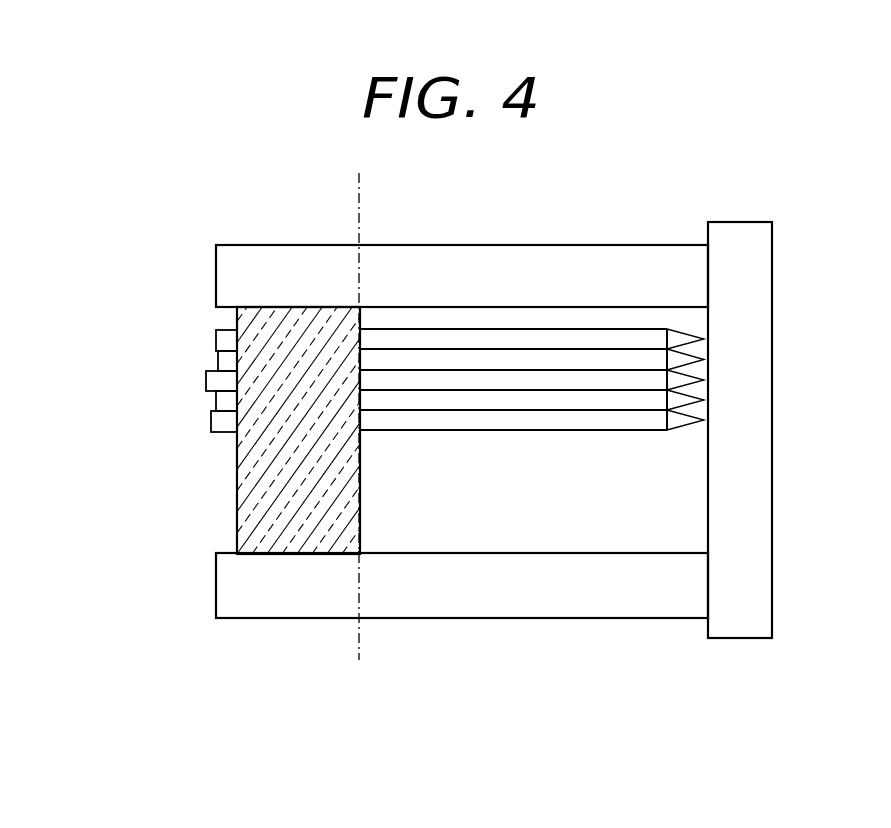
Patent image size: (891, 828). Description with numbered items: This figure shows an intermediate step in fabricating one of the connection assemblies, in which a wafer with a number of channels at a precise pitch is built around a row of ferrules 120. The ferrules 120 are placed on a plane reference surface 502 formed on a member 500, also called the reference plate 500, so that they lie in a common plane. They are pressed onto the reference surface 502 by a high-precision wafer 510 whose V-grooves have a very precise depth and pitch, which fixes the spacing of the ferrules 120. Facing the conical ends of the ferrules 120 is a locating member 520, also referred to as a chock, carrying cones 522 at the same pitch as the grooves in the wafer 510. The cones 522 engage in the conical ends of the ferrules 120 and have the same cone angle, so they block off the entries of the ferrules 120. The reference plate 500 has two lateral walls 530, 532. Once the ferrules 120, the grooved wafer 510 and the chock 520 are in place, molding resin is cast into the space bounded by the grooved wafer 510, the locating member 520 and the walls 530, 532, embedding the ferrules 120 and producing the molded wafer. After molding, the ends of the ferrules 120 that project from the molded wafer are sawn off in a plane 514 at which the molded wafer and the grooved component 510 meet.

The ferrules 120 is at (217, 340).
The reference plate 500 is at (512, 425).
The plane reference surface 502 is at (483, 492).
The high-precision wafer 510 is at (253, 493).
The plane 514 is at (359, 187).
The locating member 520 is at (736, 230).
The cones 522 is at (695, 420).
The lateral wall 530 is at (523, 253).
The lateral wall 532 is at (431, 620).